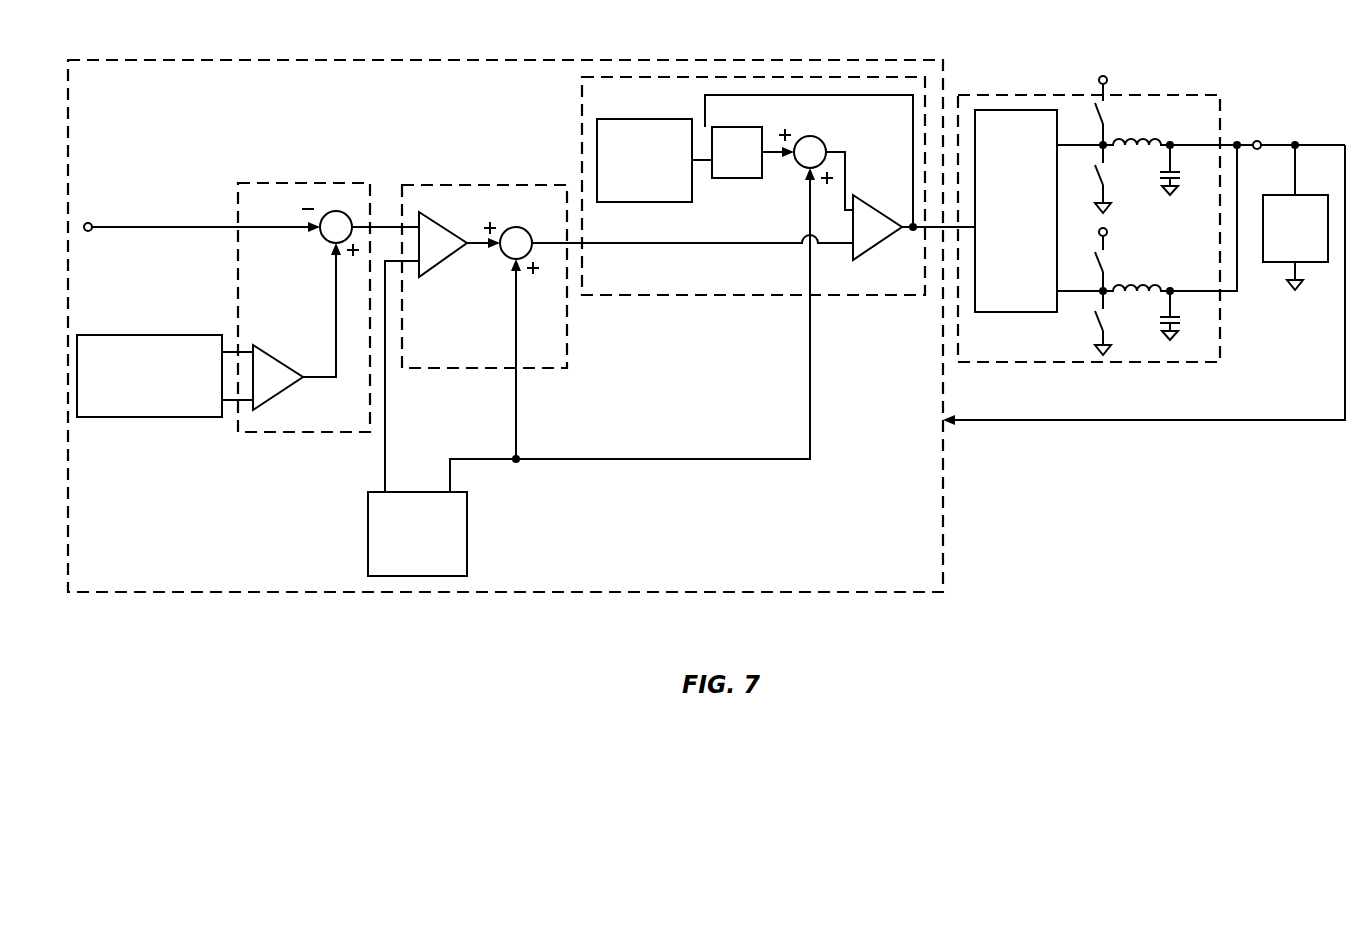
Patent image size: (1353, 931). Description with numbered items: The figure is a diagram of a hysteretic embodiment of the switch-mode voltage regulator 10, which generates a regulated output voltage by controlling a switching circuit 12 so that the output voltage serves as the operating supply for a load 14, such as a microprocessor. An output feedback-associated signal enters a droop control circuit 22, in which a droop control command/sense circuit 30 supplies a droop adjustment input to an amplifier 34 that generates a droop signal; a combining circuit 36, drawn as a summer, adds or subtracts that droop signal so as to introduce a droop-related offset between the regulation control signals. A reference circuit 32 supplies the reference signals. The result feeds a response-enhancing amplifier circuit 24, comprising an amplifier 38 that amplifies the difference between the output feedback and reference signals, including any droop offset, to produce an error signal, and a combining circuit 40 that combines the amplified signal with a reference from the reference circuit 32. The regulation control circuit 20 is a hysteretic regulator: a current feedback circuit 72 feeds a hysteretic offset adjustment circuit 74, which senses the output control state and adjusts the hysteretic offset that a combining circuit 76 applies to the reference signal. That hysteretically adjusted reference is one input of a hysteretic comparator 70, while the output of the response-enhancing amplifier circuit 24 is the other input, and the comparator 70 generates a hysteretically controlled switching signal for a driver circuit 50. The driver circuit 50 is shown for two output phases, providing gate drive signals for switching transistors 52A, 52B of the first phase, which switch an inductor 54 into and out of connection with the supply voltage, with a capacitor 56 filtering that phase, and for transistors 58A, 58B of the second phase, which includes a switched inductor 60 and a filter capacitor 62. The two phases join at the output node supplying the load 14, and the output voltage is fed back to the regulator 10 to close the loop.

The voltage regulator 10 is at (114, 574).
The switching circuit 12 is at (997, 356).
The load 14 is at (1306, 251).
The regulation control circuit 20 is at (624, 287).
The droop control circuit 22 is at (352, 416).
The response-enhancing amplifier circuit 24 is at (435, 354).
The droop control command/sense circuit 30 is at (161, 407).
The reference circuit 32 is at (428, 566).
The amplifier 34 is at (290, 368).
The combining circuit 36 is at (327, 242).
The amplifier 38 is at (447, 262).
The combining circuit 40 is at (523, 229).
The driver circuit 50 is at (1026, 247).
The switching transistor 52A is at (1096, 122).
The switching transistor 52B is at (1096, 185).
The inductor 54 is at (1146, 140).
The capacitor 56 is at (1178, 176).
The transistor 58A is at (1096, 269).
The transistor 58B is at (1096, 331).
The switched inductor 60 is at (1146, 286).
The filter capacitor 62 is at (1178, 322).
The hysteretic comparator 70 is at (875, 252).
The current feedback circuit 72 is at (655, 192).
The hysteretic offset adjustment circuit 74 is at (748, 164).
The combining circuit 76 is at (819, 140).